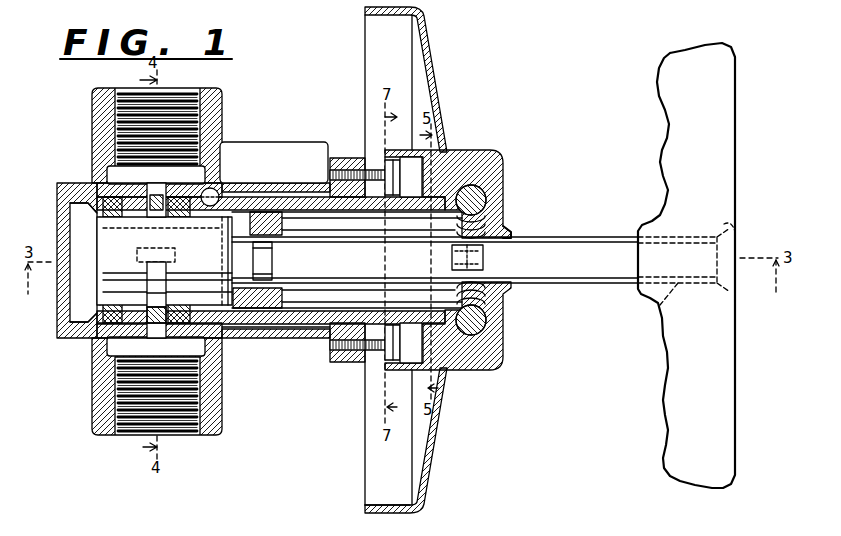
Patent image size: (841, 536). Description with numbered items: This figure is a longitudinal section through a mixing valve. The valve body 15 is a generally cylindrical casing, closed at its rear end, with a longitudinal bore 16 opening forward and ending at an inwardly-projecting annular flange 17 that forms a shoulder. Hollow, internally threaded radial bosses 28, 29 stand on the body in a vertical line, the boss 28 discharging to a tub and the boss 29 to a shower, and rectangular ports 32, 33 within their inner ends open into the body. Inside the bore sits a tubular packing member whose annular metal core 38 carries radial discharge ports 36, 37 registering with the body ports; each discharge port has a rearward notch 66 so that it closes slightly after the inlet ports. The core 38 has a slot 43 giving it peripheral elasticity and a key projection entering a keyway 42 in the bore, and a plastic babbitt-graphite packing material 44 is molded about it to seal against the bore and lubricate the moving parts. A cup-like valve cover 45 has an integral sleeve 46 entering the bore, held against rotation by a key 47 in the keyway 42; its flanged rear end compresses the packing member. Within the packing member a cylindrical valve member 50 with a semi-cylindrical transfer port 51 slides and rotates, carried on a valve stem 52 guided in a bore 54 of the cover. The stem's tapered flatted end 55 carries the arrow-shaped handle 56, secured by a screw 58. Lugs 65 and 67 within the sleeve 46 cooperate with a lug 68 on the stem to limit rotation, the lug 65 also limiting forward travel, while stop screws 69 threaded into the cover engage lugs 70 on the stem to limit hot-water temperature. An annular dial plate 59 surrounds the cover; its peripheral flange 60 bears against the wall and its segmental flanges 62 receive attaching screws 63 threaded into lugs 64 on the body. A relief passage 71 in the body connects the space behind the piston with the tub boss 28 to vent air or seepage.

The valve body 15 is at (278, 174).
The longitudinal bore 16 is at (262, 338).
The annular flange 17 is at (100, 207).
The pipe boss 28 is at (212, 422).
The pipe boss 29 is at (208, 110).
The port 32 is at (157, 333).
The port 33 is at (156, 192).
The discharge port 36 is at (153, 335).
The discharge port 37 is at (163, 217).
The annular metal core 38 is at (140, 217).
The keyway 42 is at (315, 174).
The slot 43 is at (120, 340).
The packing material 44 is at (105, 340).
The valve cover 45 is at (492, 182).
The sleeve 46 is at (308, 335).
The key 47 is at (212, 196).
The valve member 50 is at (112, 258).
The transfer port 51 is at (165, 275).
The valve stem 52 is at (588, 268).
The bore 54 is at (515, 237).
The tapered flatted end 55 is at (680, 274).
The handle 56 is at (715, 383).
The screw 58 is at (736, 231).
The dial plate 59 is at (440, 430).
The cylindrical flange 60 is at (387, 510).
The segmental flange 62 is at (387, 368).
The attaching screw 63 is at (351, 349).
The lug 64 is at (352, 145).
The lug 65 is at (272, 297).
The notch 66 is at (160, 217).
The lug 67 is at (282, 228).
The lug 68 is at (272, 258).
The stop screw 69 is at (477, 203).
The lug 70 is at (452, 256).
The relief passage 71 is at (82, 313).